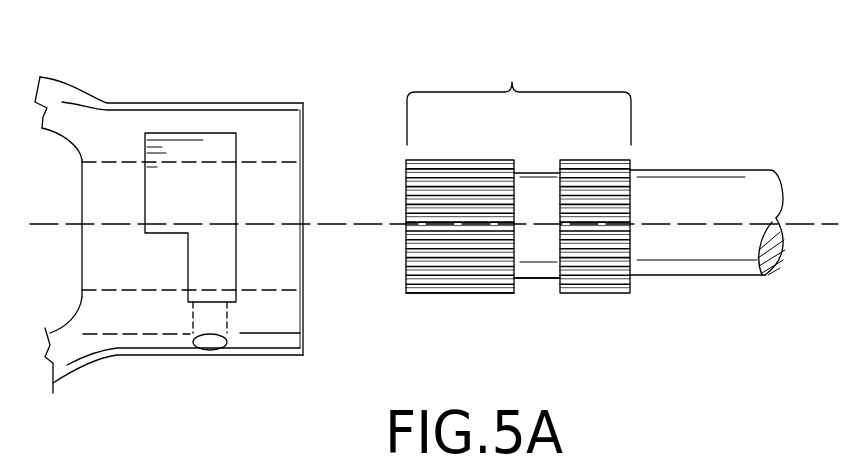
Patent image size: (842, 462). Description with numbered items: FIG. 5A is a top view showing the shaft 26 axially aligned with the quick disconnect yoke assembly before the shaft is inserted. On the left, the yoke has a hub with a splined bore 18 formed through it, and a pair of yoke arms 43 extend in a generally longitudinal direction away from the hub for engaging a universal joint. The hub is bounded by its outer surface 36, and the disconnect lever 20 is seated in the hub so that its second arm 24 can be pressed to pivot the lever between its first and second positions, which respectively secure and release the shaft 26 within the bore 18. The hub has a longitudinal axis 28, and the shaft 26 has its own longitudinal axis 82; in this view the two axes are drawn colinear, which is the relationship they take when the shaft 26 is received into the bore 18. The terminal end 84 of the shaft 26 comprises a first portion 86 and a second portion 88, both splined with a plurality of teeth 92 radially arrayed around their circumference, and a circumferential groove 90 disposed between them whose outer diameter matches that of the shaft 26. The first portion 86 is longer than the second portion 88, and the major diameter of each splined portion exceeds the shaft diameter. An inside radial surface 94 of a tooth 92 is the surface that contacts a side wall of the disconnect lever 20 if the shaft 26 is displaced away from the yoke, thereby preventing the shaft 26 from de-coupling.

The bore 18 is at (283, 185).
The disconnect lever 20 is at (170, 173).
The second arm 24 is at (201, 206).
The shaft 26 is at (681, 187).
The longitudinal axis of the hub 28 is at (38, 224).
The outer surface of the hub 36 is at (262, 102).
The yoke arms 43 is at (60, 108).
The longitudinal axis of the shaft 82 is at (808, 218).
The terminal end 84 is at (519, 96).
The first portion 86 is at (453, 296).
The second portion 88 is at (597, 298).
The circumferential groove 90 is at (542, 296).
The teeth 92 is at (437, 172).
The inside radial surface 94 is at (515, 250).